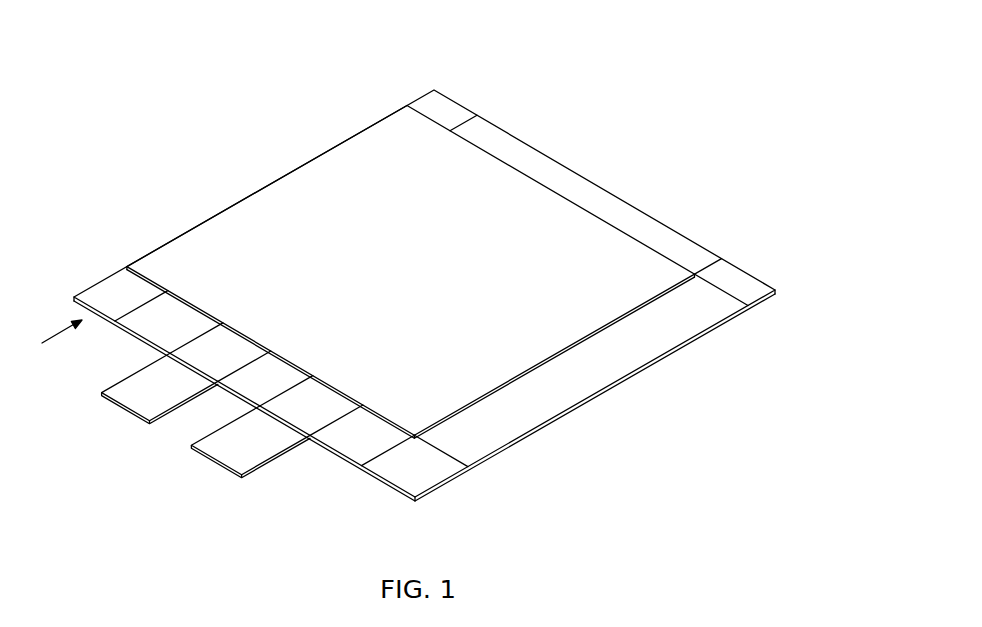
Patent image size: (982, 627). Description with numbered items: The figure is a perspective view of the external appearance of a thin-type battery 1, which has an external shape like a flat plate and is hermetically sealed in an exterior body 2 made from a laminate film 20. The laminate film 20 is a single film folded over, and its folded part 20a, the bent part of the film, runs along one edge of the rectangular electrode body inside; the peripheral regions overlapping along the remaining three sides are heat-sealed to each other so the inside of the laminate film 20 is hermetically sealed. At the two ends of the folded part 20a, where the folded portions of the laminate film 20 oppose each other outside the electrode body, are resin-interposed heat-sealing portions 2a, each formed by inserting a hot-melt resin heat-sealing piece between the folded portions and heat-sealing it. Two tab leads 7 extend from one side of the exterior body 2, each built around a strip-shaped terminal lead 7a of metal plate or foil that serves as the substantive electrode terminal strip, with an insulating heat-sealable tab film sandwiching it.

The thin-type battery 1 is at (398, 283).
The exterior body 2 is at (416, 264).
The laminate film 20 is at (411, 264).
The resin-interposed heat-sealing portion 2a is at (445, 110).
The folded part 20a is at (273, 181).
The tab lead 7 is at (181, 456).
The terminal lead 7a is at (181, 456).